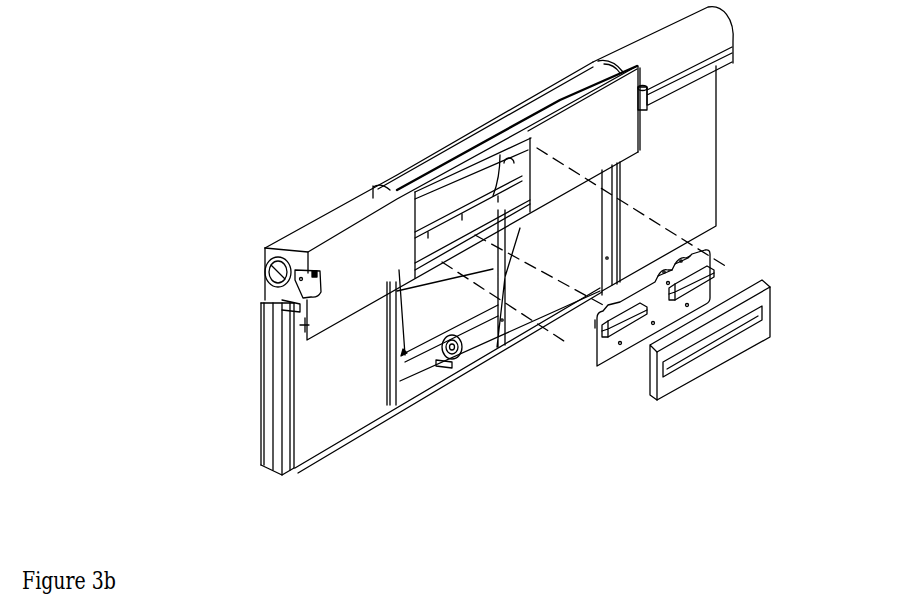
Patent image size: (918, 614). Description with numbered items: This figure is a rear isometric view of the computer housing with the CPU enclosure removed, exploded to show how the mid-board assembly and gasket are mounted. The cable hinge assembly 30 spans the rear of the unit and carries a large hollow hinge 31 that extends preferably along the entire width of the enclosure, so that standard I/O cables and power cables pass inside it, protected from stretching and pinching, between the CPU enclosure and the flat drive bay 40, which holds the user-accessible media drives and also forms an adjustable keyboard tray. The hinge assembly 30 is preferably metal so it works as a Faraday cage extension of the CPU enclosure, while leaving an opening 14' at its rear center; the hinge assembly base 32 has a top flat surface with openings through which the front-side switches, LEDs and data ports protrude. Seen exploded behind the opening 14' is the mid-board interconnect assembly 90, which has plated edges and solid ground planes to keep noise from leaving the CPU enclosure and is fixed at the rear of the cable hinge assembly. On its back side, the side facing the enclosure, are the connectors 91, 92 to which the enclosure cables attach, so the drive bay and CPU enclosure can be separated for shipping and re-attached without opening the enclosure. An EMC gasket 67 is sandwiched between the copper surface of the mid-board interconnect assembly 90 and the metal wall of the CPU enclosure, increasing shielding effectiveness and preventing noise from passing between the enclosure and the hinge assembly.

The cable hinge assembly 30 is at (337, 195).
The large hollow hinge 31 is at (268, 277).
The hinge assembly base 32 is at (328, 303).
The opening 14' is at (465, 156).
The flat drive bay 40 is at (245, 380).
The mid-board interconnect assembly 90 is at (599, 352).
The connector 91 is at (713, 281).
The connector 92 is at (600, 345).
The EMC gasket 67 is at (733, 345).